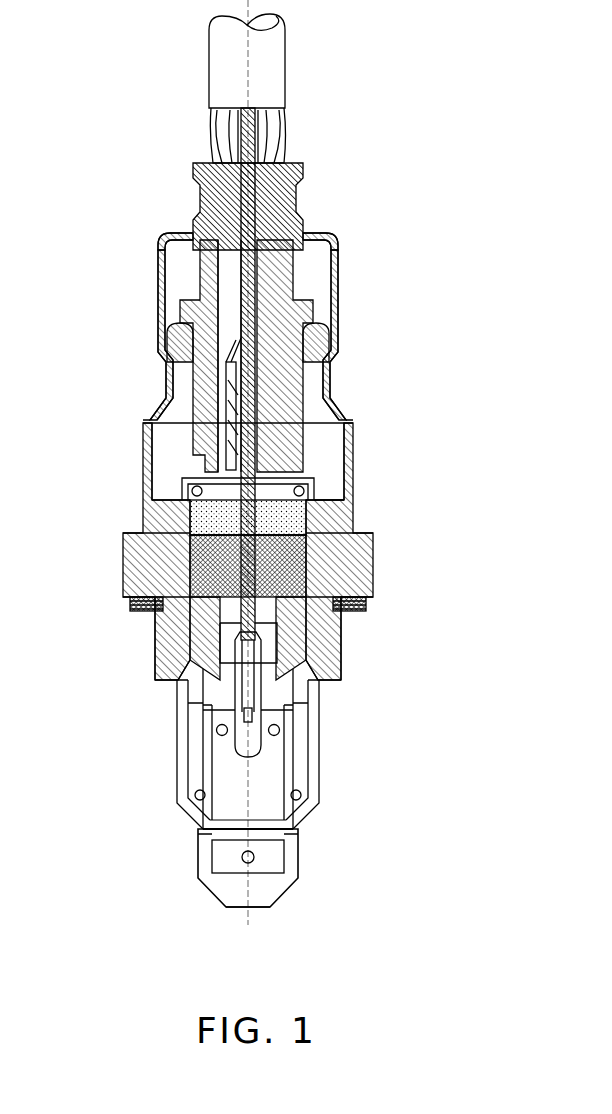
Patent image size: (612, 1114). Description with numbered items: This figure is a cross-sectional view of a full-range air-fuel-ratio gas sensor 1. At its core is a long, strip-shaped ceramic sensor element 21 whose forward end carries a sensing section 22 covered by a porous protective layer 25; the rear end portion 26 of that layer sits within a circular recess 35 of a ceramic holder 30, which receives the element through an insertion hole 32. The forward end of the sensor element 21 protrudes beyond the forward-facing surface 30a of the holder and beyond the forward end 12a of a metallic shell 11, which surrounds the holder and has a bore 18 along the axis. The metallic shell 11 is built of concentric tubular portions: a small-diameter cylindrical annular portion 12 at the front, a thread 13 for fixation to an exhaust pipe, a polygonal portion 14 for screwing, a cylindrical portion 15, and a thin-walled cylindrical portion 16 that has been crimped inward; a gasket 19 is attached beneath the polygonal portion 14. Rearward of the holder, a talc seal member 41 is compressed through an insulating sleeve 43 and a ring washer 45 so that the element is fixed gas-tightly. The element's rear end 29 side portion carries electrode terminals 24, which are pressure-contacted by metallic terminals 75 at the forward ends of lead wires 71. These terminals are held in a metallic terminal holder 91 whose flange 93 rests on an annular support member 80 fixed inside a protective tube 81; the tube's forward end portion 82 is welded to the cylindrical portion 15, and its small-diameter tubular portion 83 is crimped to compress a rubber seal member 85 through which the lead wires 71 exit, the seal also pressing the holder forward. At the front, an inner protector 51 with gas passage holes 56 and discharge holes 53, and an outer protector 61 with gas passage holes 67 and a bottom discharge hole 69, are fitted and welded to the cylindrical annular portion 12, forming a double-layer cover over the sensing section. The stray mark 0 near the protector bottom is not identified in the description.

The gas sensor 1 is at (148, 61).
The metallic shell 11 is at (375, 586).
The cylindrical annular portion 12 is at (176, 700).
The forward end of the metallic shell 12a is at (176, 722).
The thread 13 is at (152, 652).
The polygonal portion 14 is at (124, 583).
The cylindrical portion 15 is at (146, 525).
The thin-walled cylindrical portion 16 is at (190, 465).
The bore 18 is at (320, 704).
The gasket 19 is at (132, 606).
The sensor element 21 is at (332, 672).
The sensing section 22 is at (268, 720).
The electrode terminals 24 is at (176, 410).
The protective layer 25 is at (305, 760).
The rear end portion of the protective layer 26 is at (332, 655).
The rear end 29 is at (176, 366).
The ceramic holder 30 is at (340, 636).
The forward-facing surface 30a is at (176, 678).
The insertion hole 32 is at (371, 560).
The circular recess 35 is at (170, 688).
The seal member 41 is at (140, 563).
The sleeve 43 is at (350, 522).
The ring washer 45 is at (178, 497).
The inner protector 51 is at (180, 782).
The discharge holes 53 is at (296, 858).
The gas passage holes 56 is at (190, 738).
The outer protector 61 is at (177, 768).
The gas passage holes 67 is at (176, 808).
The discharge hole 69 is at (256, 912).
The lead wires 71 is at (214, 127).
The metallic terminals 75 is at (176, 386).
The annular support member 80 is at (166, 324).
The protective tube 81 is at (138, 424).
The forward end portion 82 is at (141, 446).
The small-diameter tubular portion 83 is at (188, 205).
The seal member 85 is at (194, 170).
The metallic terminal holder 91 is at (176, 270).
The flange 93 is at (200, 305).
The cap edge 0 is at (297, 834).